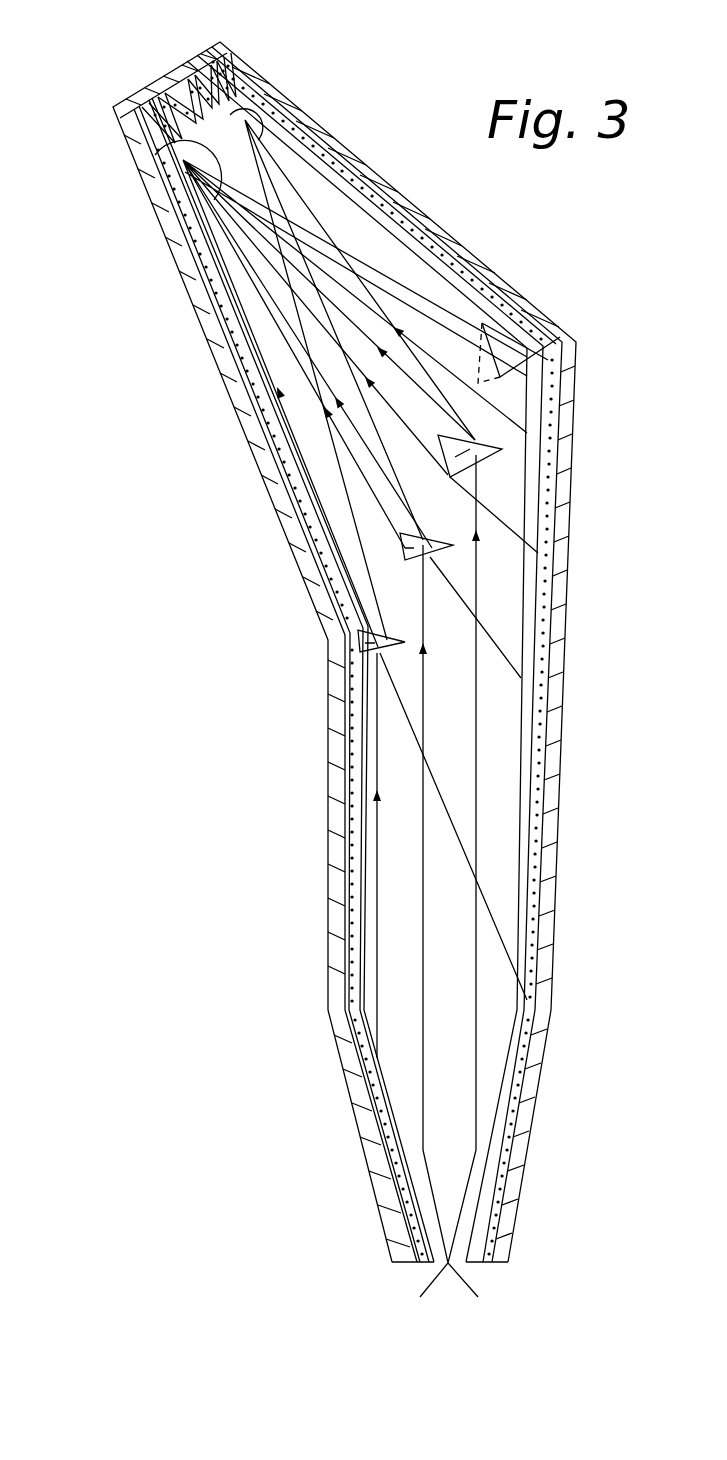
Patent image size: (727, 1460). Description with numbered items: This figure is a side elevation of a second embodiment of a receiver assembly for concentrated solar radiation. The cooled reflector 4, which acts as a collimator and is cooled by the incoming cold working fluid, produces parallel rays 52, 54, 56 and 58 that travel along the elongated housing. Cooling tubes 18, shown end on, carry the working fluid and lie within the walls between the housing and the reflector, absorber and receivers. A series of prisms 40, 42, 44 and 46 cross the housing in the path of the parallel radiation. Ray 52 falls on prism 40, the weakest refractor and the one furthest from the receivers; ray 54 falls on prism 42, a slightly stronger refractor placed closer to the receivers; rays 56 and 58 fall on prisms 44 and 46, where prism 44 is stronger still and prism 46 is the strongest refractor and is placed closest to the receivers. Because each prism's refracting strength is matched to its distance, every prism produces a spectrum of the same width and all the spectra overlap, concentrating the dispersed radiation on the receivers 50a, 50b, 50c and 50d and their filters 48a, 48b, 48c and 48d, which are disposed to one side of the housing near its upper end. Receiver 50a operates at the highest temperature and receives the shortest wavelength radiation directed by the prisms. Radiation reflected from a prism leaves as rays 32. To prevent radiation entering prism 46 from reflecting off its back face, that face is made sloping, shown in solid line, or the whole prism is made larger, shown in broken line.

The cooled reflector 4 is at (500, 1158).
The cooling tubes 18 is at (540, 1090).
The rays 32 is at (513, 420).
The prism 40 is at (358, 648).
The prism 42 is at (400, 547).
The prism 44 is at (475, 440).
The prism 46 is at (510, 347).
The filter 48a is at (172, 180).
The filter 48b is at (190, 205).
The filter 48c is at (300, 118).
The filter 48d is at (240, 135).
The receiver 50a is at (180, 147).
The receiver 50b is at (190, 120).
The receiver 50c is at (205, 104).
The receiver 50d is at (218, 62).
The ray 52 is at (377, 832).
The ray 54 is at (422, 907).
The ray 56 is at (475, 980).
The ray 58 is at (520, 950).